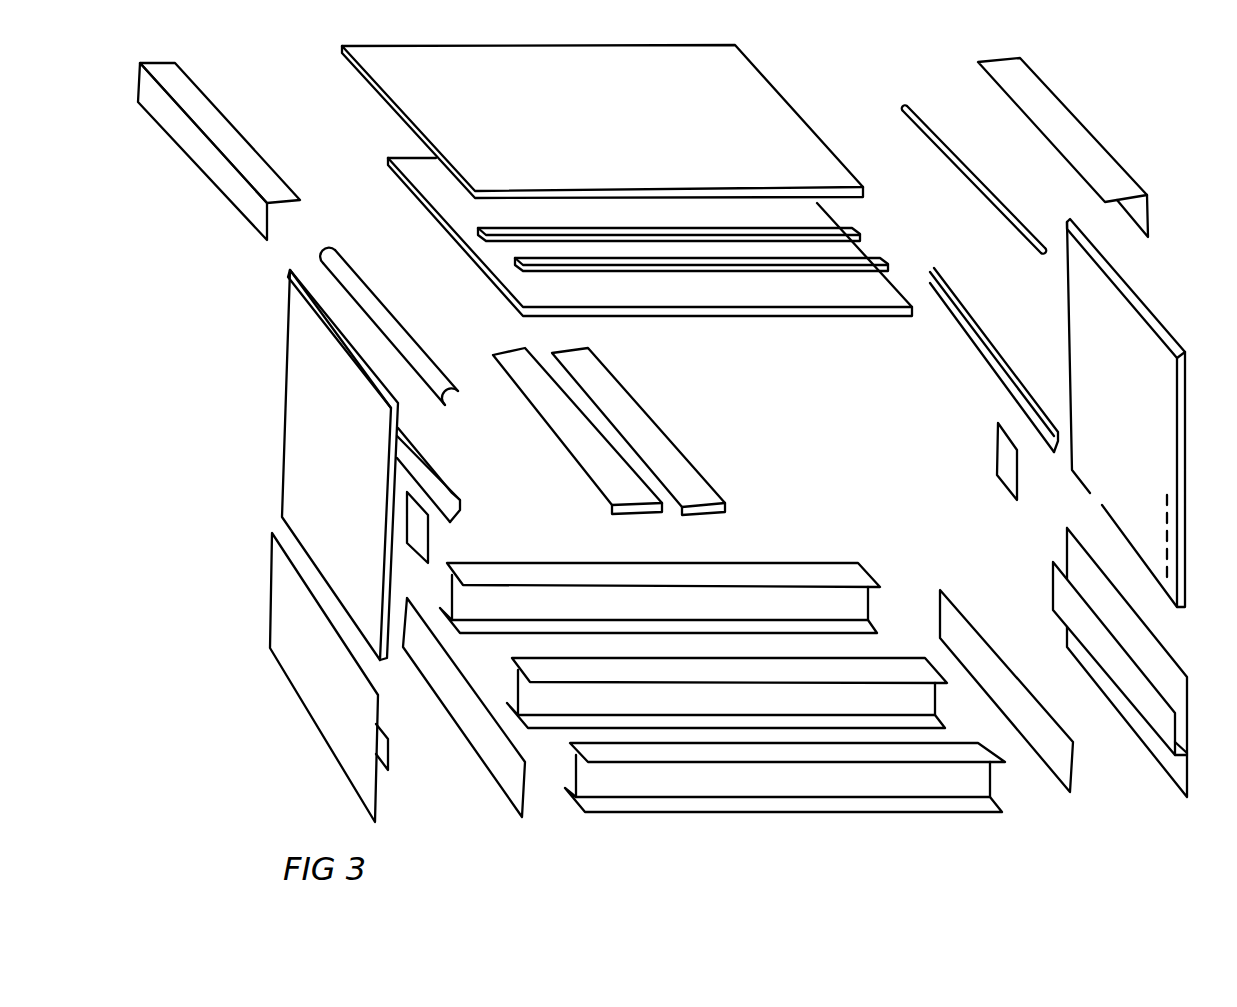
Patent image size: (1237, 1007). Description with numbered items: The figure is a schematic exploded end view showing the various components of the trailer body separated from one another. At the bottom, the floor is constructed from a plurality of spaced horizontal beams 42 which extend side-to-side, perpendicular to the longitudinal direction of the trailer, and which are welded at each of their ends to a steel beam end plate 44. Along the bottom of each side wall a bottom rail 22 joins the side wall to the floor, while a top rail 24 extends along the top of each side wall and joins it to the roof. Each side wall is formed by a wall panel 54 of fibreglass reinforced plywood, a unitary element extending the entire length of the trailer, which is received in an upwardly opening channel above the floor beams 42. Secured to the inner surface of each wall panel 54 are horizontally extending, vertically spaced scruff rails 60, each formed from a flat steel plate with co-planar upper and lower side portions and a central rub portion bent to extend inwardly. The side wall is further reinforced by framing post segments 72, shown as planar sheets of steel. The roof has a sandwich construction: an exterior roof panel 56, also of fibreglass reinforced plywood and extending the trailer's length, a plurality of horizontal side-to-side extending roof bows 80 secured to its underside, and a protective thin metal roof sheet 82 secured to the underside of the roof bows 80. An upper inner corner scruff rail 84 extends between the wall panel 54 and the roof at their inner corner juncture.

The bottom rail 22 is at (330, 677).
The top rail 24 is at (216, 182).
The horizontal beam 42 is at (580, 615).
The steel beam end plate 44 is at (465, 697).
The wall panel 54 is at (349, 455).
The roof panel 56 is at (582, 124).
The scruff rail 60 is at (462, 497).
The post segment 72 is at (431, 543).
The roof bow 80 is at (888, 262).
The roof sheet 82 is at (727, 314).
The upper inner corner scruff rail 84 is at (1003, 220).